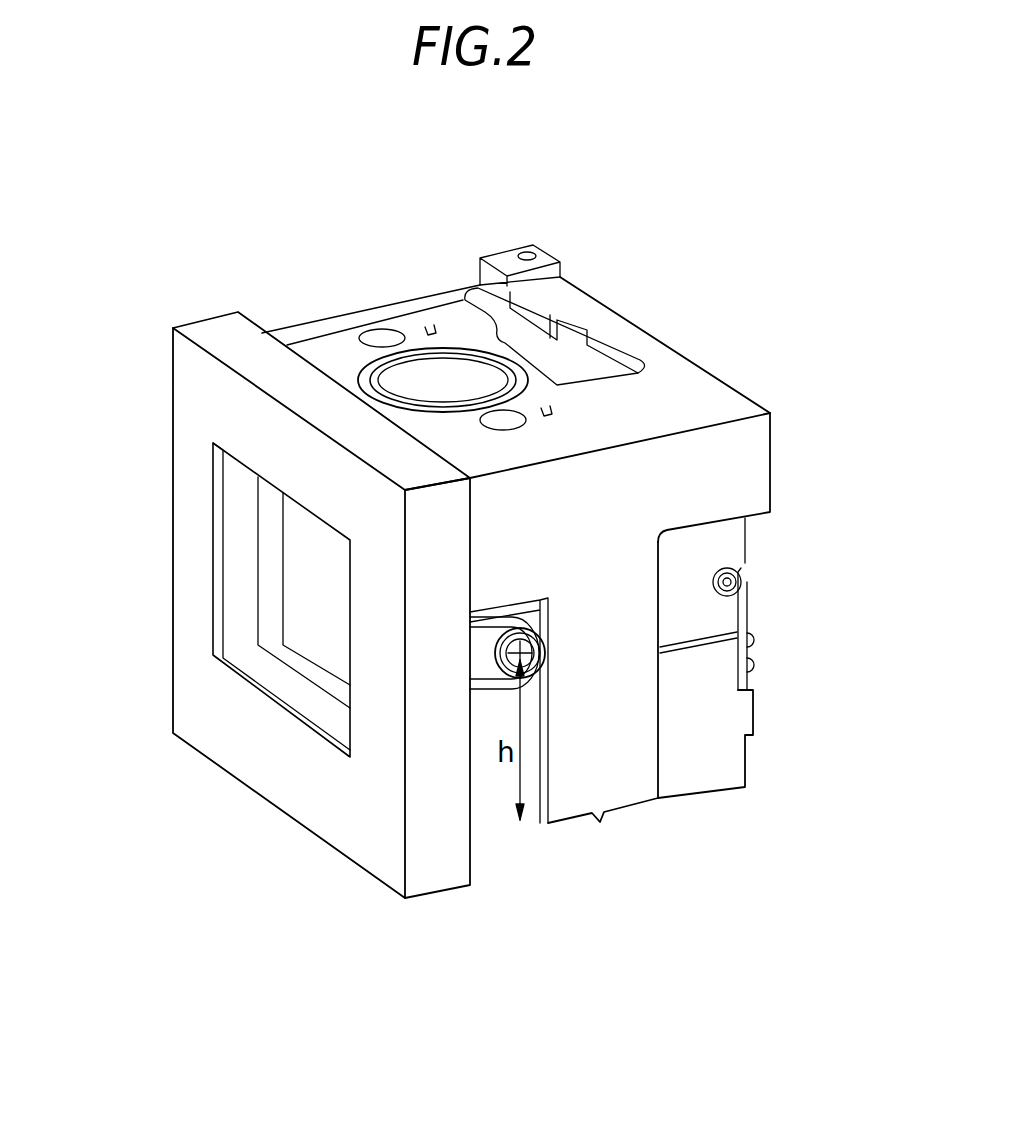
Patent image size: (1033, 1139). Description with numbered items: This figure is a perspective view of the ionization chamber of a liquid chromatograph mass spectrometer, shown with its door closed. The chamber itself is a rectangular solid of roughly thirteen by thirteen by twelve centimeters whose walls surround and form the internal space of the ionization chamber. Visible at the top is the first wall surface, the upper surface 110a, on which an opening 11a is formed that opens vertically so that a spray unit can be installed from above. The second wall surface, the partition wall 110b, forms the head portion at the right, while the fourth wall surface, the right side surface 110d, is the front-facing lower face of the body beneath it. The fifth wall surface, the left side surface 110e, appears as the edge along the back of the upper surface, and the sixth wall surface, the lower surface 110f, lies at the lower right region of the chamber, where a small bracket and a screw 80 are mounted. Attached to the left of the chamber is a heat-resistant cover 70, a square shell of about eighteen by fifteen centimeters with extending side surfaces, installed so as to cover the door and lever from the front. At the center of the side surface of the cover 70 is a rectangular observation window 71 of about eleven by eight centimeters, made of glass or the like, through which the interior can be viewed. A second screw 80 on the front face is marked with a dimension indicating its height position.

The heat-resistant cover 70 is at (200, 532).
The observation window 71 is at (308, 627).
The screw 80 is at (493, 677).
The opening 11a is at (467, 393).
The first wall surface (upper surface) 110a is at (623, 332).
The second wall surface (partition wall) 110b is at (757, 483).
The fourth wall surface (right side surface) 110d is at (570, 782).
The fifth wall surface (left side surface) 110e is at (347, 318).
The sixth wall surface (lower surface) 110f is at (707, 797).